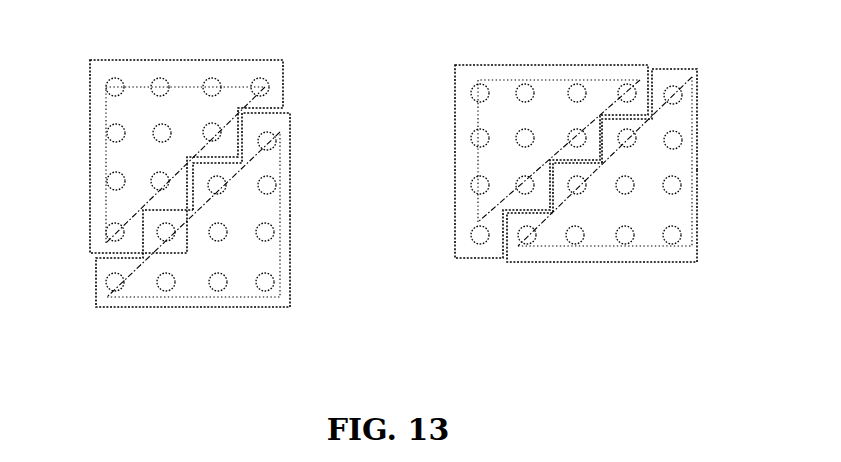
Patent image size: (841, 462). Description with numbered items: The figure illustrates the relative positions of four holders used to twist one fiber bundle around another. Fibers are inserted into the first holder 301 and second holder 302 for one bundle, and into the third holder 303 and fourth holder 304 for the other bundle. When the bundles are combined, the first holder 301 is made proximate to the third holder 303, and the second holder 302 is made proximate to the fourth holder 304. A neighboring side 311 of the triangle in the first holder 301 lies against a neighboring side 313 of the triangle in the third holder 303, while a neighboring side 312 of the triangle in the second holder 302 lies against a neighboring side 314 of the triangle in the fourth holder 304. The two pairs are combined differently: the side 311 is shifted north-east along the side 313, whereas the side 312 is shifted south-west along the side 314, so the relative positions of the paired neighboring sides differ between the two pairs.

The first holder 301 is at (155, 58).
The neighboring side of the triangle in the first holder 311 is at (128, 203).
The neighboring side of the triangle in the third holder 313 is at (250, 162).
The third holder 303 is at (215, 308).
The second holder 302 is at (528, 63).
The neighboring side of the triangle in the second holder 312 is at (500, 205).
The neighboring side of the triangle in the fourth holder 314 is at (655, 110).
The fourth holder 304 is at (623, 263).